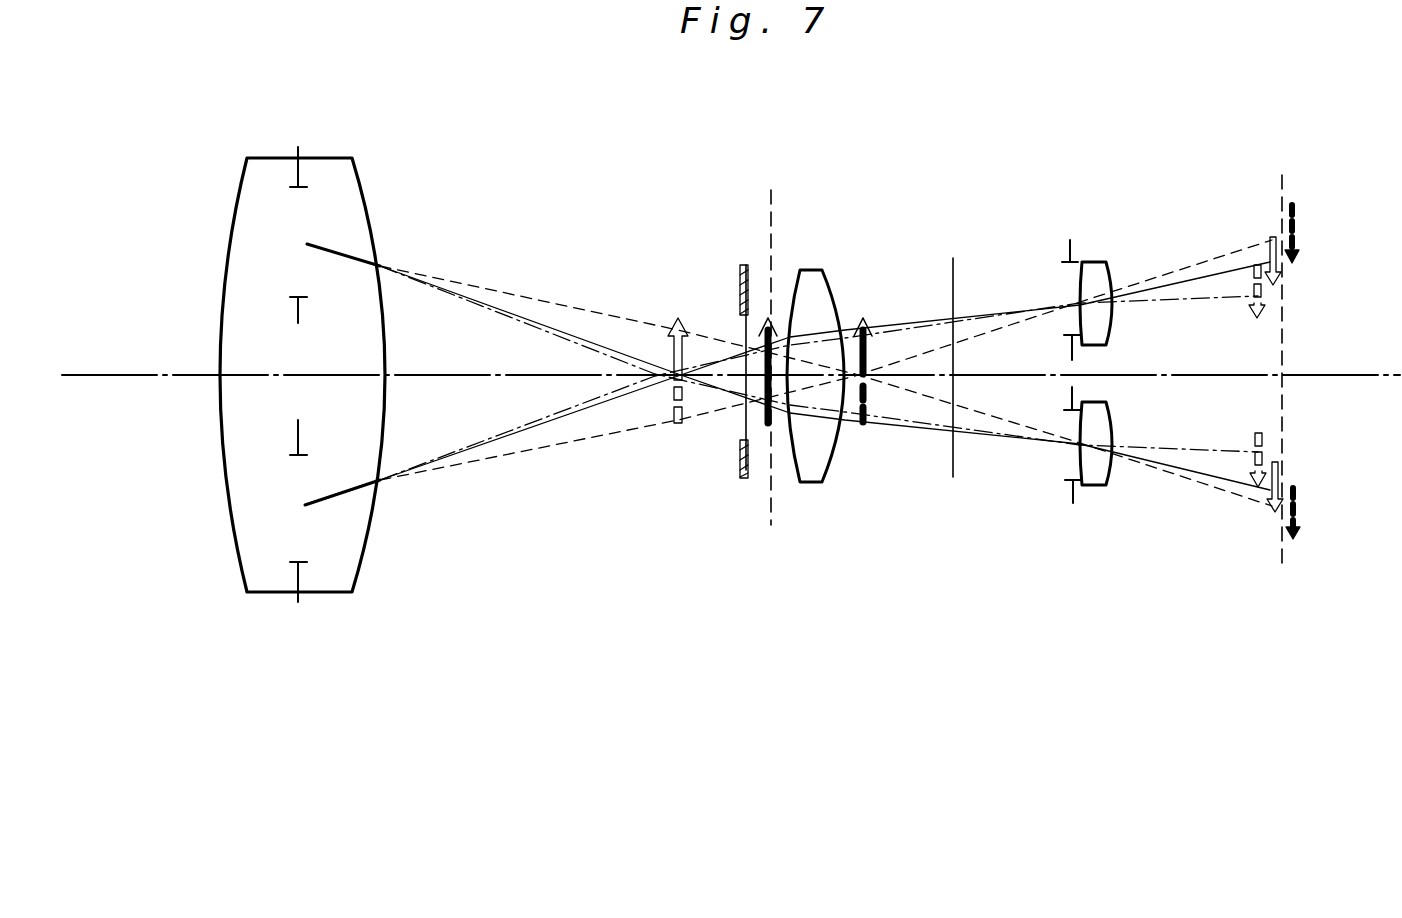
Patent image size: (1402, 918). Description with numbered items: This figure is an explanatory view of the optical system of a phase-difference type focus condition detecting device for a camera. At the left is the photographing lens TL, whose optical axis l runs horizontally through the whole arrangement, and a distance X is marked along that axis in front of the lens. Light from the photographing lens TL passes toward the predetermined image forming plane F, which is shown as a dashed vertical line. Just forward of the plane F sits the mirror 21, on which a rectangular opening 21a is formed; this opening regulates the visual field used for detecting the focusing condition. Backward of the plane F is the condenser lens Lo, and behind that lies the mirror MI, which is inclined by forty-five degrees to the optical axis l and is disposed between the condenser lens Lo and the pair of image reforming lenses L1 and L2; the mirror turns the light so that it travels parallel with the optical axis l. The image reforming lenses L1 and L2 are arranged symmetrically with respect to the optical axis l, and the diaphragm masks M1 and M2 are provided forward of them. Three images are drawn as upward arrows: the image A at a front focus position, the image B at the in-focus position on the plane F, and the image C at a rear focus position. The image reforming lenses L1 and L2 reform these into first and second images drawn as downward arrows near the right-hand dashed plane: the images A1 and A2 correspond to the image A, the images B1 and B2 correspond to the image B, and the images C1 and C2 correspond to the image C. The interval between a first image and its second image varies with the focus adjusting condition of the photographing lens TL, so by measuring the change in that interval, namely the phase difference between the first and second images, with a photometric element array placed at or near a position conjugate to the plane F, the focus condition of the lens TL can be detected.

The photographing lens TL is at (263, 158).
The optical axis l is at (114, 370).
The distance along optical axis X is at (512, 380).
The image at front focus position A is at (679, 317).
The image at in-focus position B is at (766, 322).
The image at rear focus position C is at (864, 318).
The predetermined image forming plane F is at (769, 345).
The mirror 21 is at (751, 470).
The rectangular opening 21a is at (744, 419).
The condenser lens Lo is at (806, 271).
The mirror MI is at (952, 478).
The diaphragm mask M1 is at (1066, 268).
The diaphragm mask M2 is at (1066, 465).
The image reforming lens L1 is at (1098, 265).
The image reforming lens L2 is at (1097, 486).
The first image corresponding to image A A1 is at (1254, 306).
The first image corresponding to image B B1 is at (1278, 290).
The first image corresponding to image C C1 is at (1298, 251).
The second image corresponding to image A A2 is at (1256, 486).
The second image corresponding to image B B2 is at (1278, 516).
The second image corresponding to image C C2 is at (1296, 531).